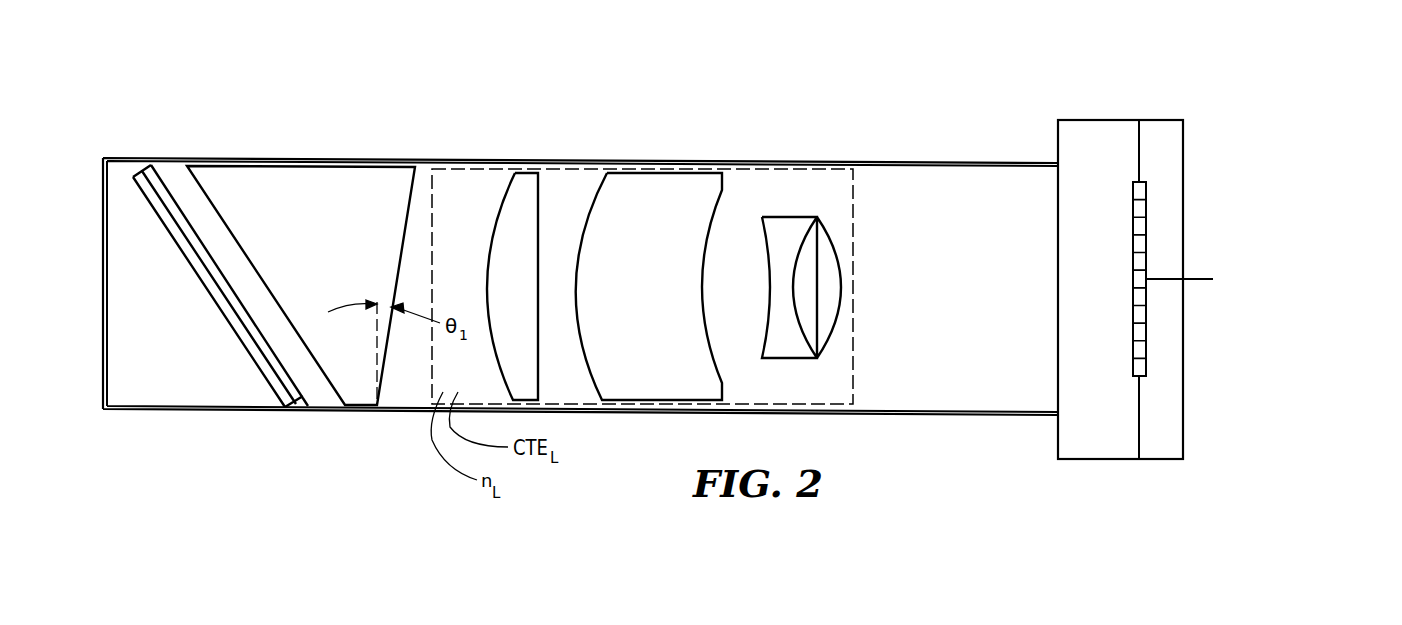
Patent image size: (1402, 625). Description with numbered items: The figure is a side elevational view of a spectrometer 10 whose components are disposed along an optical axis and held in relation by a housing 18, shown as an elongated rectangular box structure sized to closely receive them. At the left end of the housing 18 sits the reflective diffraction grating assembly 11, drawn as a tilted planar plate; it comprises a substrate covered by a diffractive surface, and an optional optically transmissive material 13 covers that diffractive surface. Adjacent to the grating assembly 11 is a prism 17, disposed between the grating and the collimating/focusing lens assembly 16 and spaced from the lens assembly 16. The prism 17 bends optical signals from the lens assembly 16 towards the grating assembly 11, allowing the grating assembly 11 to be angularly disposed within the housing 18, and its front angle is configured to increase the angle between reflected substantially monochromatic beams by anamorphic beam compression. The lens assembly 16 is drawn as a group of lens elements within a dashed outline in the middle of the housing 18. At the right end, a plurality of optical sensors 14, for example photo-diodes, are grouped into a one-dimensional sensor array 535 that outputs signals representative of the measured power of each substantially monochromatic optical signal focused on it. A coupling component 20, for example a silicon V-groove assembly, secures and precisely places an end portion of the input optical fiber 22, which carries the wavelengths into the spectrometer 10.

The spectrometer 10 is at (203, 118).
The reflective diffraction grating assembly 11 is at (198, 280).
The optically transmissive material 13 is at (283, 363).
The optical sensors 14 is at (1132, 225).
The collimating/focusing lens assembly 16 is at (855, 142).
The prism 17 is at (315, 176).
The housing 18 is at (975, 163).
The coupling component 20 is at (1137, 278).
The input optical fiber 22 is at (1200, 278).
The sensor array 535 is at (1168, 176).